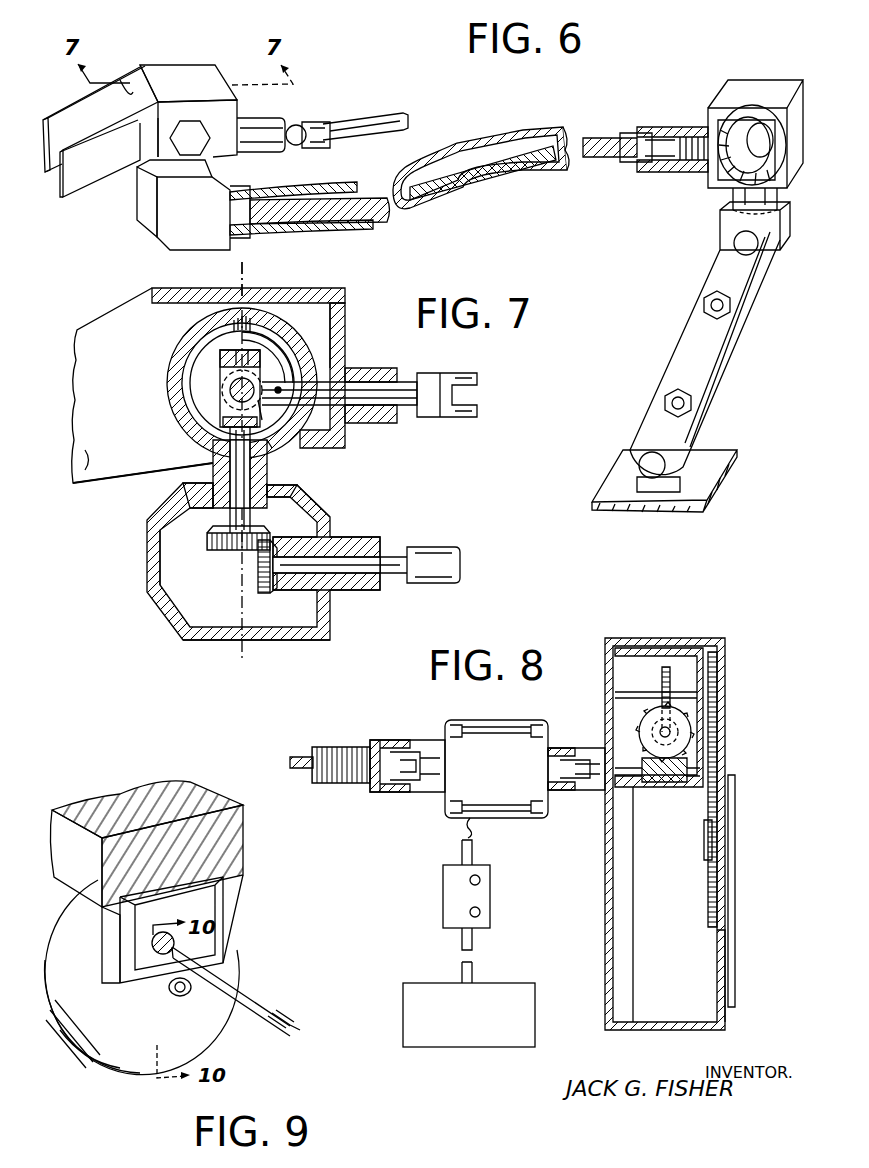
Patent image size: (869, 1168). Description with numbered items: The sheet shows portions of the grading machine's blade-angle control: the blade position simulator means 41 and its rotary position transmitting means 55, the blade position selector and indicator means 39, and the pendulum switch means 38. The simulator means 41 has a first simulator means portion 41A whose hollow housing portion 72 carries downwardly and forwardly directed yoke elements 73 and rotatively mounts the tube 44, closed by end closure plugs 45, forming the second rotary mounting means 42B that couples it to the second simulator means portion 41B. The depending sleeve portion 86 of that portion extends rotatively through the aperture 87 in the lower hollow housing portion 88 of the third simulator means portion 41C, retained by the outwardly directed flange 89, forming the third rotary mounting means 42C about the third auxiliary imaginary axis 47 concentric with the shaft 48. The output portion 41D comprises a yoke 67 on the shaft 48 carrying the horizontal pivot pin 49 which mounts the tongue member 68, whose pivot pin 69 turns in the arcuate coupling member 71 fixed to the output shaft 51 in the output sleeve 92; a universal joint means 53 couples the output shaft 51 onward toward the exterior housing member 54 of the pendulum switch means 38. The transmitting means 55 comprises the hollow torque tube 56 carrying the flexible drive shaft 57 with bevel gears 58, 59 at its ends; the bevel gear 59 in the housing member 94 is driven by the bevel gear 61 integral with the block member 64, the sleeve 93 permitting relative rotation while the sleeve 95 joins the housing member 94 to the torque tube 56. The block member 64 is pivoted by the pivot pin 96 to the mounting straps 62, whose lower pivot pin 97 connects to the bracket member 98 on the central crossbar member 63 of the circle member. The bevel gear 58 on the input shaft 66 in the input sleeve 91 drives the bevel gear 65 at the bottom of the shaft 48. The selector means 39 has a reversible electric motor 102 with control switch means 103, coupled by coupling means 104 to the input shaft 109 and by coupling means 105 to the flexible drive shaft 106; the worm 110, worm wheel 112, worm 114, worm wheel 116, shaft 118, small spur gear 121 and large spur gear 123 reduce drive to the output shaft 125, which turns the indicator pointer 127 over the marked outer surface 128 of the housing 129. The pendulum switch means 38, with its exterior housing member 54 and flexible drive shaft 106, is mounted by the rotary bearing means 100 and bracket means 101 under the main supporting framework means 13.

In FIG. 9, the main supporting framework means 13 is at (70, 826).
In FIG. 9, the rotary position responsive pendulum switch means 38 is at (108, 1060).
In FIG. 8, the blade position selector and indicator means 39 is at (734, 622).
In FIG. 6, the blade position simulator means 41 is at (212, 63).
In FIG. 7, the blade position simulator means 41 is at (348, 296).
In FIG. 6, the first simulator means portion 41A is at (241, 101).
In FIG. 7, the first simulator means portion 41A is at (346, 323).
In FIG. 7, the second simulator means portion 41B is at (275, 472).
In FIG. 6, the third simulator means portion 41C is at (158, 233).
In FIG. 7, the third simulator means portion 41C is at (182, 640).
In FIG. 7, the simulator output portion 41D is at (216, 386).
In FIG. 7, the second rotary mounting means 42B is at (182, 337).
In FIG. 7, the third rotary mounting means 42C is at (188, 495).
In FIG. 6, the tube 44 is at (132, 92).
In FIG. 7, the tube 44 is at (176, 424).
In FIG. 6, the end closure plug 45 is at (171, 140).
In FIG. 7, the third auxiliary imaginary axis 47 is at (246, 266).
In FIG. 7, the shaft 48 is at (246, 522).
In FIG. 7, the horizontal pivot pin 49 is at (232, 392).
In FIG. 6, the output shaft 51 is at (292, 116).
In FIG. 7, the output shaft 51 is at (402, 382).
In FIG. 6, the universal joint means 53 is at (308, 150).
In FIG. 7, the universal joint means 53 is at (478, 376).
In FIG. 9, the exterior housing member 54 is at (68, 932).
In FIG. 6, the rotary position transmitting means 55 is at (574, 119).
In FIG. 6, the hollow torque tube 56 is at (588, 176).
In FIG. 6, the flexible drive shaft 57 is at (495, 142).
In FIG. 7, the bevel gear 58 is at (270, 592).
In FIG. 6, the bevel gear 59 is at (728, 172).
In FIG. 6, the bevel gear 61 is at (770, 174).
In FIG. 6, the mounting straps 62 is at (735, 352).
In FIG. 6, the central crossbar member 63 is at (708, 500).
In FIG. 6, the block member 64 is at (790, 213).
In FIG. 7, the bevel gear 65 is at (220, 548).
In FIG. 7, the input shaft 66 is at (392, 576).
In FIG. 7, the yoke 67 is at (271, 418).
In FIG. 7, the block or tongue member 68 is at (268, 358).
In FIG. 7, the pivot pin 69 is at (248, 332).
In FIG. 7, the arcuate coupling member 71 is at (262, 342).
In FIG. 6, the hollow housing portion 72 is at (219, 79).
In FIG. 7, the hollow housing portion 72 is at (340, 344).
In FIG. 6, the yoke elements 73 is at (82, 186).
In FIG. 7, the yoke elements 73 is at (81, 479).
In FIG. 7, the depending sleeve portion 86 is at (212, 466).
In FIG. 7, the aperture 87 is at (282, 488).
In FIG. 7, the lower hollow housing portion 88 is at (252, 636).
In FIG. 7, the outwardly directed flange 89 is at (306, 510).
In FIG. 7, the input sleeve 91 is at (345, 588).
In FIG. 7, the output sleeve 92 is at (383, 422).
In FIG. 6, the sleeve 93 is at (780, 197).
In FIG. 6, the housing member 94 is at (787, 88).
In FIG. 6, the sleeve 95 is at (706, 135).
In FIG. 6, the pivot pin 96 is at (756, 247).
In FIG. 6, the lower pivot pin 97 is at (660, 467).
In FIG. 6, the bracket member 98 is at (668, 510).
In FIG. 9, the rotary bearing means 100 is at (174, 996).
In FIG. 9, the bracket means 101 is at (236, 908).
In FIG. 8, the electric motor 102 is at (500, 728).
In FIG. 8, the control switch means 103 is at (495, 898).
In FIG. 8, the coupling means 104 is at (578, 746).
In FIG. 8, the coupling means 105 is at (403, 760).
In FIG. 8, the flexible drive shaft 106 is at (302, 778).
In FIG. 9, the flexible drive shaft 106 is at (300, 1030).
In FIG. 8, the input shaft 109 is at (628, 790).
In FIG. 8, the worm 110 is at (690, 774).
In FIG. 8, the worm wheel 112 is at (692, 730).
In FIG. 8, the worm 114 is at (692, 748).
In FIG. 8, the worm wheel 116 is at (660, 682).
In FIG. 8, the shaft 118 is at (688, 694).
In FIG. 8, the small spur gear 121 is at (714, 707).
In FIG. 8, the large spur gear 123 is at (714, 852).
In FIG. 8, the output shaft 125 is at (712, 830).
In FIG. 8, the indicator pointer or index member 127 is at (736, 897).
In FIG. 8, the outer surface 128 is at (726, 956).
In FIG. 8, the housing 129 is at (650, 1028).